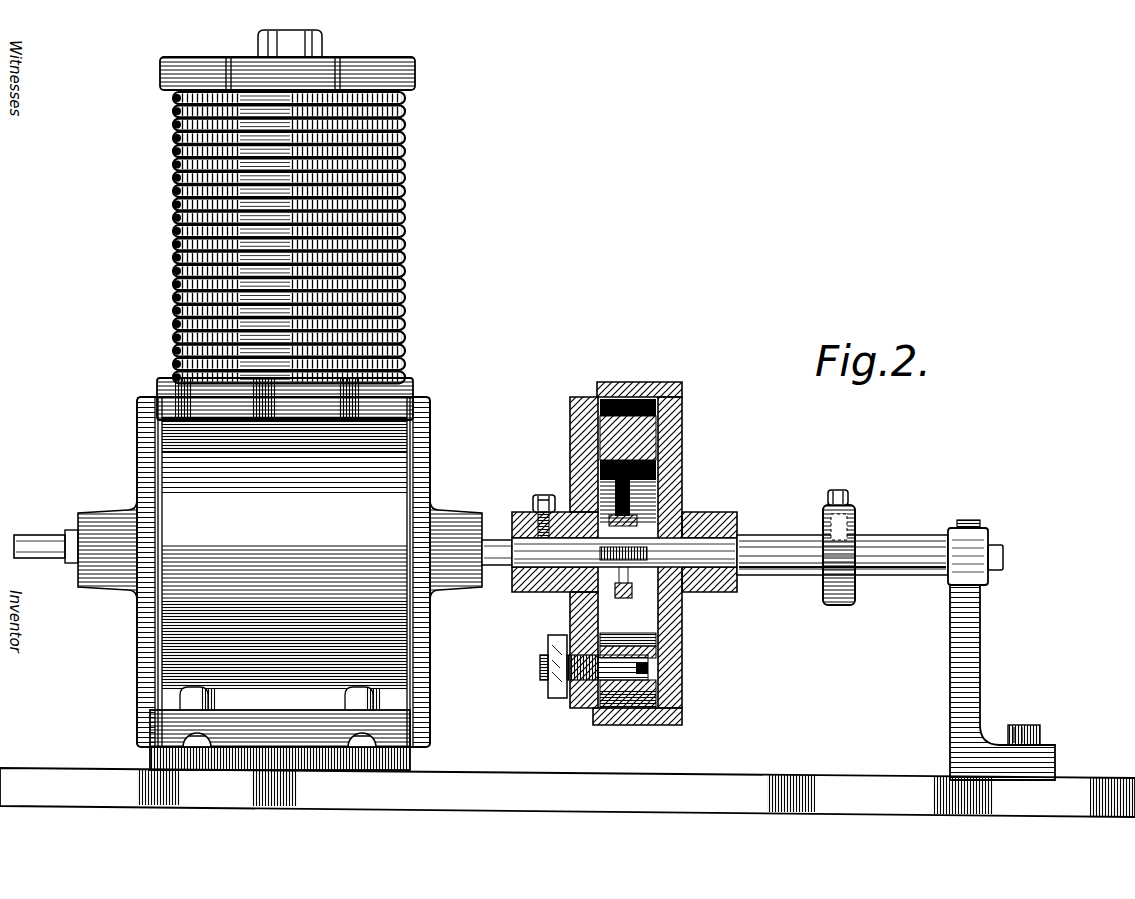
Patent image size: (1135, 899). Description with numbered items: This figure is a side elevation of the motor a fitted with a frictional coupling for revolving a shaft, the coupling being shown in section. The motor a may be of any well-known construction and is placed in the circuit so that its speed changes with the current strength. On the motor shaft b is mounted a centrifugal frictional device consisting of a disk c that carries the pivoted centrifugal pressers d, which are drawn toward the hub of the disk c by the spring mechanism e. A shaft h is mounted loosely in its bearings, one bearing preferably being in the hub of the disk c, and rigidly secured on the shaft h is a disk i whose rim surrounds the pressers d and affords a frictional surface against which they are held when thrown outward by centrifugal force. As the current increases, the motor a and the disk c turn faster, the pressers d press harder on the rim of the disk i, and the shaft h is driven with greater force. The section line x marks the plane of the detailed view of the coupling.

The motor a is at (248, 583).
The shaft b is at (491, 535).
The disk c is at (572, 436).
The centrifugal pressers d is at (622, 425).
The spring mechanism e is at (647, 514).
The shaft h is at (842, 547).
The disk i is at (682, 440).
The section line x is at (657, 382).